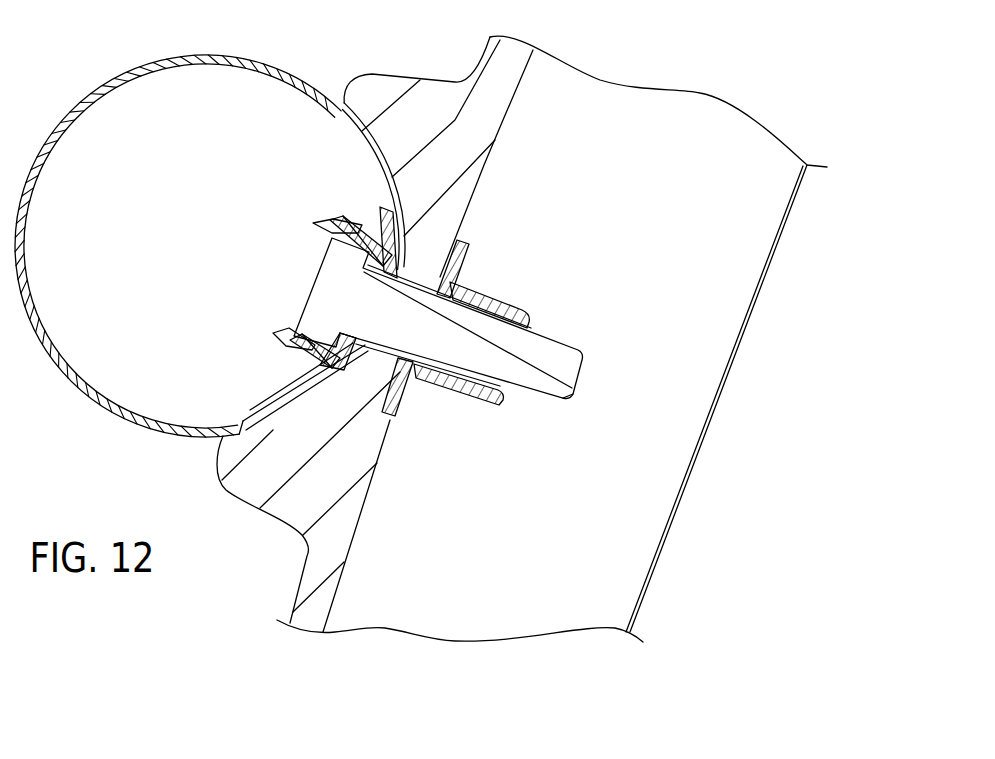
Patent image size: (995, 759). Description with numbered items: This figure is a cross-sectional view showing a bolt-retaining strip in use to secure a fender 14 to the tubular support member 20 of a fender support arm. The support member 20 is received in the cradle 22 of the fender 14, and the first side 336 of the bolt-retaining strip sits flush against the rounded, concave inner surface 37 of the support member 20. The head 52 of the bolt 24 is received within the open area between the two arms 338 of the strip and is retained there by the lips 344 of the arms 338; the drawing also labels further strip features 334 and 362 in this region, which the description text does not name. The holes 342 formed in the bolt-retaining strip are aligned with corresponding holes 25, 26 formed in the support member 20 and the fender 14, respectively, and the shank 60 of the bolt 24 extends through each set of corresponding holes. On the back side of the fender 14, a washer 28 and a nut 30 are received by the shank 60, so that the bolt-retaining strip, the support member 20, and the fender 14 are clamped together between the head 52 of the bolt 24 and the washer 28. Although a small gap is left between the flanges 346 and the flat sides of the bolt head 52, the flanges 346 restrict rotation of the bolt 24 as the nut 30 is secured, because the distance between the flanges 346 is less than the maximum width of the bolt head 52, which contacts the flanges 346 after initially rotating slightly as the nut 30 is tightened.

The fender 14 is at (488, 98).
The support member 20 is at (70, 112).
The cradle 22 is at (382, 97).
The bolt 24 is at (452, 375).
The holes 25 is at (413, 370).
The holes 26 is at (420, 270).
The washer 28 is at (465, 249).
The nut 30 is at (505, 308).
The inner surface 37 is at (235, 421).
The head 52 is at (330, 290).
The shank 60 is at (550, 377).
The opening 334 is at (391, 232).
The first side 336 is at (352, 366).
The arms 338 is at (332, 224).
The holes 342 is at (346, 333).
The lips 344 is at (333, 226).
The flanges 346 is at (358, 232).
The clip 362 is at (375, 212).